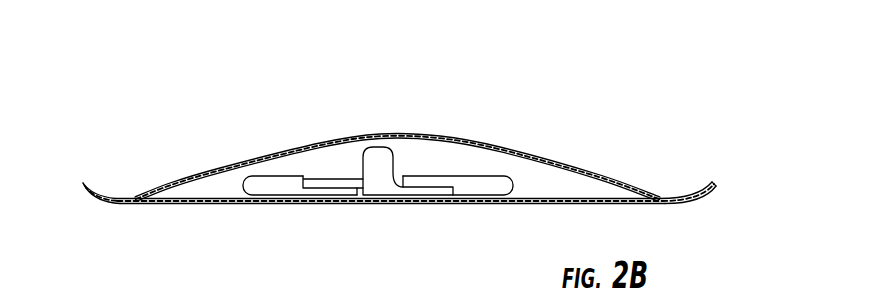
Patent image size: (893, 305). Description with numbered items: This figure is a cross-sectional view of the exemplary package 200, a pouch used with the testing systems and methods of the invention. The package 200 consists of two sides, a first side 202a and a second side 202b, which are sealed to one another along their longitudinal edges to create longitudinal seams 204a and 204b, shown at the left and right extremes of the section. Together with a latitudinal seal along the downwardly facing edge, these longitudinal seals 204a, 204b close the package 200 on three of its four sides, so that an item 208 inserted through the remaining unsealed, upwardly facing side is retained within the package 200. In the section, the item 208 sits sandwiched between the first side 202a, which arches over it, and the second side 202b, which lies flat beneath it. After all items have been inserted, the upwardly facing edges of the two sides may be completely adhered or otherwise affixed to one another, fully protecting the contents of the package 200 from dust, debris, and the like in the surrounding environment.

The package 200 is at (250, 105).
The first side 202a is at (515, 147).
The second side 202b is at (515, 204).
The longitudinal seam 204a is at (84, 182).
The longitudinal seam 204b is at (714, 183).
The item 208 is at (388, 164).